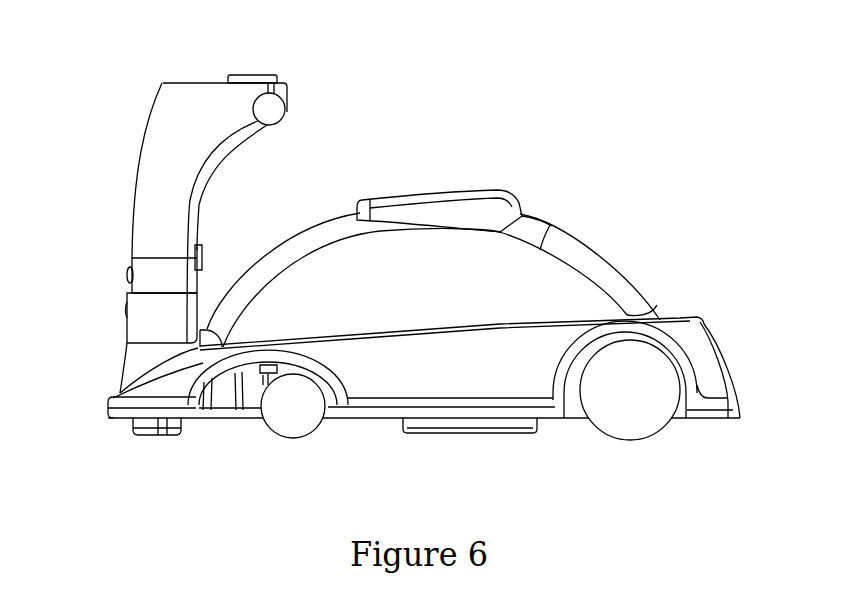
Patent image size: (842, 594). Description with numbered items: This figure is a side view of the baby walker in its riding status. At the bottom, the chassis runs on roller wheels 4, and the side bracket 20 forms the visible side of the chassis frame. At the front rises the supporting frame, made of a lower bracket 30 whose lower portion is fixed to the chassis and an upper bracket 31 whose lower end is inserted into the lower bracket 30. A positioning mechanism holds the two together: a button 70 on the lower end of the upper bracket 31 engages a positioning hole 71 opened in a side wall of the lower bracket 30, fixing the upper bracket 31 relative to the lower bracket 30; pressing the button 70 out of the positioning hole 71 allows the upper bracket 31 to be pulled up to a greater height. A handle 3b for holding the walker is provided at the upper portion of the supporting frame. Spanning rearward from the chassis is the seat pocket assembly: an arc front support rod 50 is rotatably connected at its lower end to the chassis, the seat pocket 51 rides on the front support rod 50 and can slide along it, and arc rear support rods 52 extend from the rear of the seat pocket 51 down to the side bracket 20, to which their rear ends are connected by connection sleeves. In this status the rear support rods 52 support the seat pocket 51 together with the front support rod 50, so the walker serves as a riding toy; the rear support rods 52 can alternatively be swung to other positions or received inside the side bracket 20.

The handle 3b is at (265, 108).
The upper bracket 31 is at (157, 195).
The button 70 is at (127, 270).
The positioning hole 71 is at (127, 308).
The lower bracket 30 is at (158, 350).
The front support rod 50 is at (312, 213).
The seat pocket 51 is at (418, 195).
The rear support rods 52 is at (533, 227).
The side bracket 20 is at (489, 379).
The roller wheels 4 is at (293, 420).